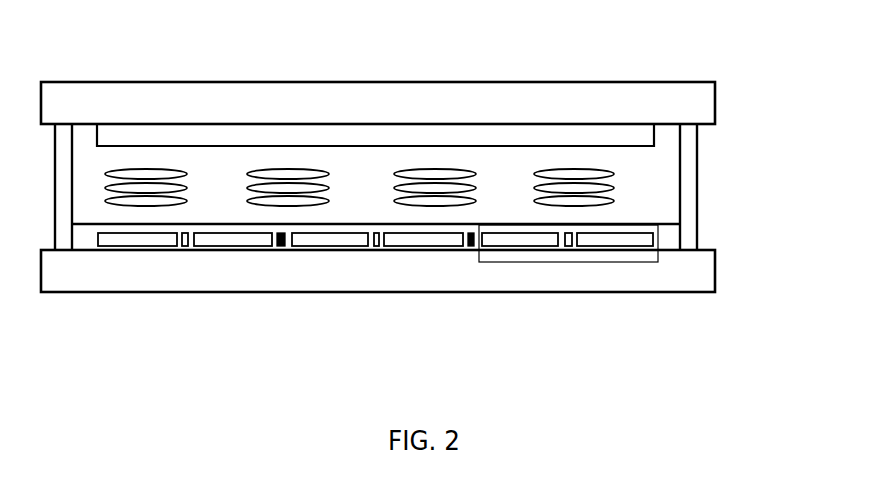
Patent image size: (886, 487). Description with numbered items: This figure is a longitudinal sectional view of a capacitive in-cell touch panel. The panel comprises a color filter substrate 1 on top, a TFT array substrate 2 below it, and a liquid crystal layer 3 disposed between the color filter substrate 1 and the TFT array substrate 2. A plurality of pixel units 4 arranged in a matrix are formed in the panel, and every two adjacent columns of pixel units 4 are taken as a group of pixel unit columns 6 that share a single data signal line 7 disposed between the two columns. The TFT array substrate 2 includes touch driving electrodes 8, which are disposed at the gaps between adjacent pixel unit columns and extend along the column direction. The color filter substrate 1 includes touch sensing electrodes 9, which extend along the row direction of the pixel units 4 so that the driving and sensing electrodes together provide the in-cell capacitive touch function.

The color filter substrate 1 is at (421, 90).
The TFT array substrate 2 is at (421, 258).
The liquid crystal layer 3 is at (614, 188).
The pixel unit 4 is at (397, 285).
The pixel unit column 6 is at (568, 294).
The data signal line 7 is at (377, 284).
The touch driving electrode 8 is at (375, 288).
The touch sensing electrode 9 is at (375, 81).